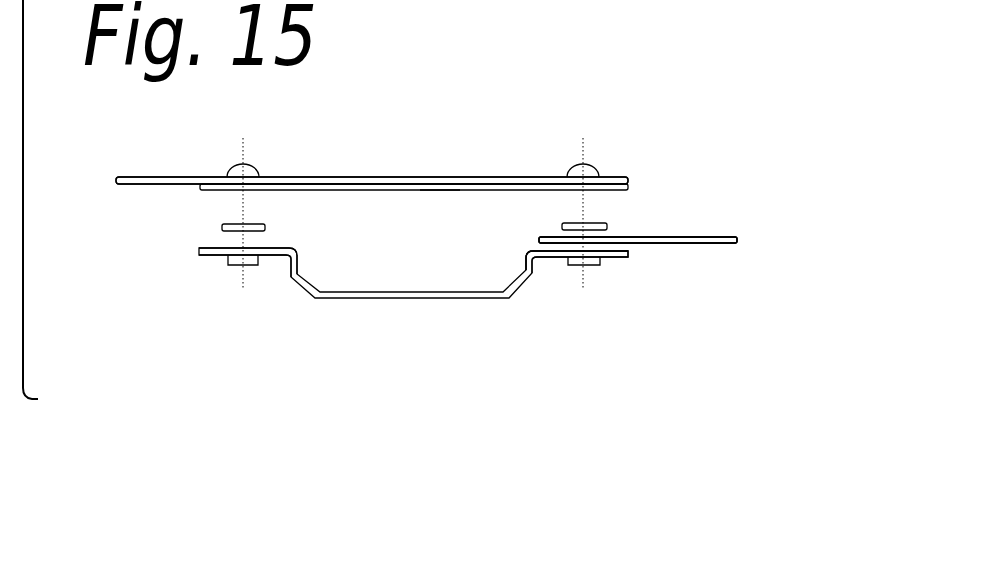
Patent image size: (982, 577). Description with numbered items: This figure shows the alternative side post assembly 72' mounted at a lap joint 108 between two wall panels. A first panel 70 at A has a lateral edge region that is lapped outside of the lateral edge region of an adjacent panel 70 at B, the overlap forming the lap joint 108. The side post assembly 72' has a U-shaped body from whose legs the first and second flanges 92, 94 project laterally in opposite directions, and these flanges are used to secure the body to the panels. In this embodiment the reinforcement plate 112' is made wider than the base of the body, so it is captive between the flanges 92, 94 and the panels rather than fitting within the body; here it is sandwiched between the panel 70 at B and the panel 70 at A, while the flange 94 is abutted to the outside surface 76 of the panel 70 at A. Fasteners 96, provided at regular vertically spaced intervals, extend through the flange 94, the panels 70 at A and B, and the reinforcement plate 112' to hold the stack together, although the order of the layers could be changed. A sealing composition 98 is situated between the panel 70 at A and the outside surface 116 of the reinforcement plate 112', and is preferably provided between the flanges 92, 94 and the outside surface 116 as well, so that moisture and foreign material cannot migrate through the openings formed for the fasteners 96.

The panel 70 is at (387, 178).
The reinforcement plate 112' is at (414, 144).
The outside surface of the reinforcement plate 116 is at (427, 191).
The fastener 96 is at (272, 190).
The sealing composition 98 is at (265, 227).
The side post assembly 72' is at (413, 307).
The first flange 92 is at (268, 258).
The second flange 94 is at (625, 258).
The outside surface 76 is at (693, 243).
The first panel location A is at (715, 243).
The second panel location B is at (617, 184).
The lap joint 108 is at (725, 201).